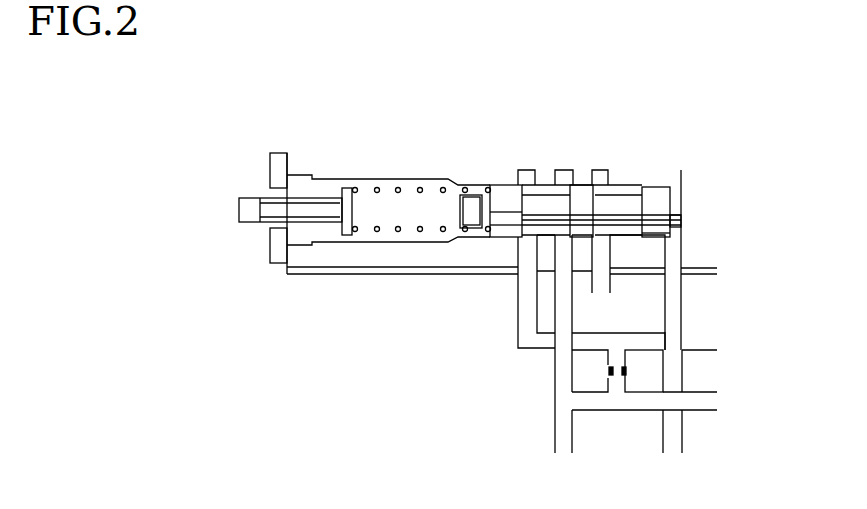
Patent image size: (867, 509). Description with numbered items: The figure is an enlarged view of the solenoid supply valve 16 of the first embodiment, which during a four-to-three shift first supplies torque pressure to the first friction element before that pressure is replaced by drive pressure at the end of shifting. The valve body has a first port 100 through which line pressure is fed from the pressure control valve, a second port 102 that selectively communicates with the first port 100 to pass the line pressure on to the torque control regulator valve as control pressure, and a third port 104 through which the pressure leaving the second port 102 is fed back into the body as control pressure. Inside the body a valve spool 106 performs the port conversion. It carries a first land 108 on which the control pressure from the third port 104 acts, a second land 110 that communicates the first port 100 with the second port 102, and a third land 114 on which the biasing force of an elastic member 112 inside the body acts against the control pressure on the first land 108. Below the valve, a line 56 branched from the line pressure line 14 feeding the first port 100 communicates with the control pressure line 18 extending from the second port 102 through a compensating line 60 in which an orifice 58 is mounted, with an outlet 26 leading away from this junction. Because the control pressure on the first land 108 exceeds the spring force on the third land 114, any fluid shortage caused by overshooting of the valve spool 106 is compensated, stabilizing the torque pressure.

The solenoid supply valve 16 is at (226, 211).
The elastic member 112 is at (378, 190).
The third land 114 is at (503, 190).
The second land 110 is at (584, 192).
The valve spool 106 is at (617, 186).
The first land 108 is at (655, 192).
The third port 104 is at (678, 247).
The first port 100 is at (563, 252).
The second port 102 is at (524, 249).
The control pressure line 18 is at (692, 338).
The line pressure line 14 is at (557, 434).
The compensating line 60 is at (595, 381).
The orifice 58 is at (624, 371).
The outlet 26 is at (715, 402).
The line 56 is at (690, 402).